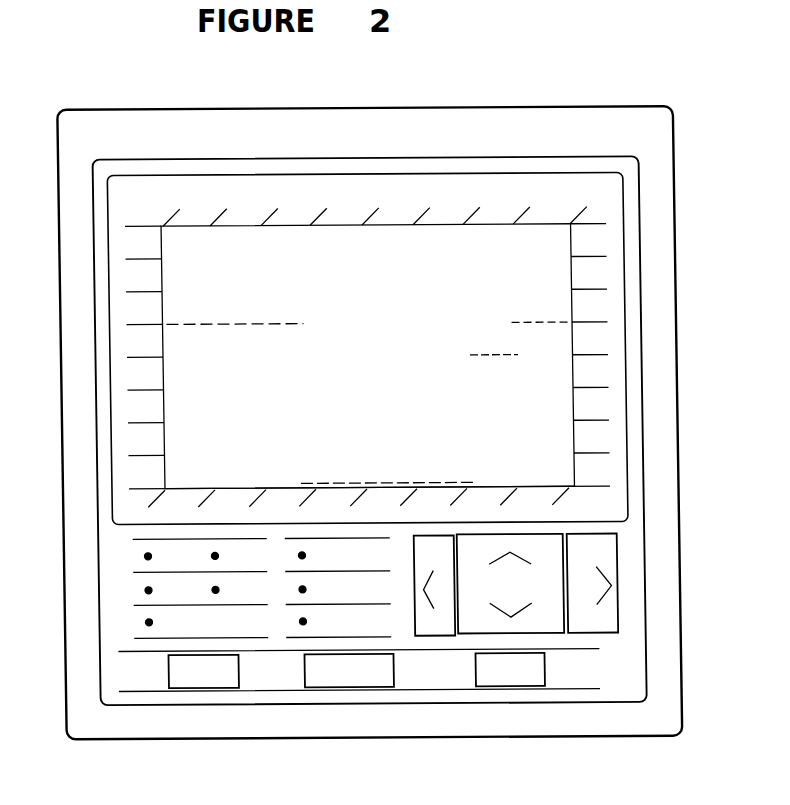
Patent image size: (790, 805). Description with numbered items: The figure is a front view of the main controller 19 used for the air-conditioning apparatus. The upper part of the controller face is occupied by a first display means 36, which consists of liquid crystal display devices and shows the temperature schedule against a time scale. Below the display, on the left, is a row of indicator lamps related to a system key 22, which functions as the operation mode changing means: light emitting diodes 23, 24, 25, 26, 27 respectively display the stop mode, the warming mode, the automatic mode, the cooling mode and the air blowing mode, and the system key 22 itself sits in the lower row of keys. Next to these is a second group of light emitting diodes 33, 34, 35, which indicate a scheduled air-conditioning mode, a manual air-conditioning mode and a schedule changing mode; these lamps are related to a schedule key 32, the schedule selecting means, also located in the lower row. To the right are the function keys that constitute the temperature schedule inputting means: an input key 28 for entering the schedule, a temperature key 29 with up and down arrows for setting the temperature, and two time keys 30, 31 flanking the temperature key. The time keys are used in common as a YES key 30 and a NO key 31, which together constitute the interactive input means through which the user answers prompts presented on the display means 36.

The main controller 19 is at (63, 110).
The first display means 36 is at (189, 225).
The light emitting diode 23 is at (213, 552).
The light emitting diode 33 is at (300, 552).
The light emitting diode 24 is at (142, 555).
The light emitting diode 25 is at (142, 589).
The light emitting diode 26 is at (142, 621).
The light emitting diode 27 is at (213, 592).
The light emitting diode 34 is at (296, 589).
The light emitting diode 35 is at (300, 625).
The system key 22 is at (195, 688).
The schedule key 32 is at (338, 688).
The input key 28 is at (496, 688).
The NO key 31 is at (436, 637).
The temperature key 29 is at (553, 635).
The YES key 30 is at (616, 616).